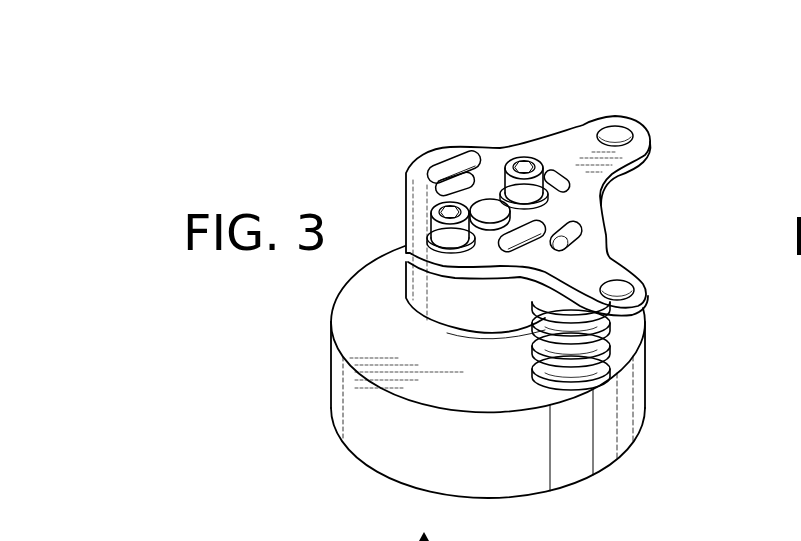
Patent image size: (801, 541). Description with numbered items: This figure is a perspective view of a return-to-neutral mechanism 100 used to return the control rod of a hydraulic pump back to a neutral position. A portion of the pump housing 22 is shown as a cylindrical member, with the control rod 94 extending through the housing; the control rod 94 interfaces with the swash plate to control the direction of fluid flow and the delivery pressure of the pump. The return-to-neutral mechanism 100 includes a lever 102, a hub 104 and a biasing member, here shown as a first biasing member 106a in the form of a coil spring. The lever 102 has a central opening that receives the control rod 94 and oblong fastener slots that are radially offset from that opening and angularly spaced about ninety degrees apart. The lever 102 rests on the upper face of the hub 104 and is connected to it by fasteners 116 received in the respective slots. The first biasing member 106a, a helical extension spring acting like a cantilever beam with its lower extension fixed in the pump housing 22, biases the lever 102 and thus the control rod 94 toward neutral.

The return-to-neutral mechanism 100 is at (424, 140).
The pump housing 22 is at (604, 444).
The control rod 94 is at (488, 208).
The lever 102 is at (592, 211).
The hub 104 is at (413, 295).
The first biasing member 106a is at (612, 343).
The fasteners 116 is at (431, 201).